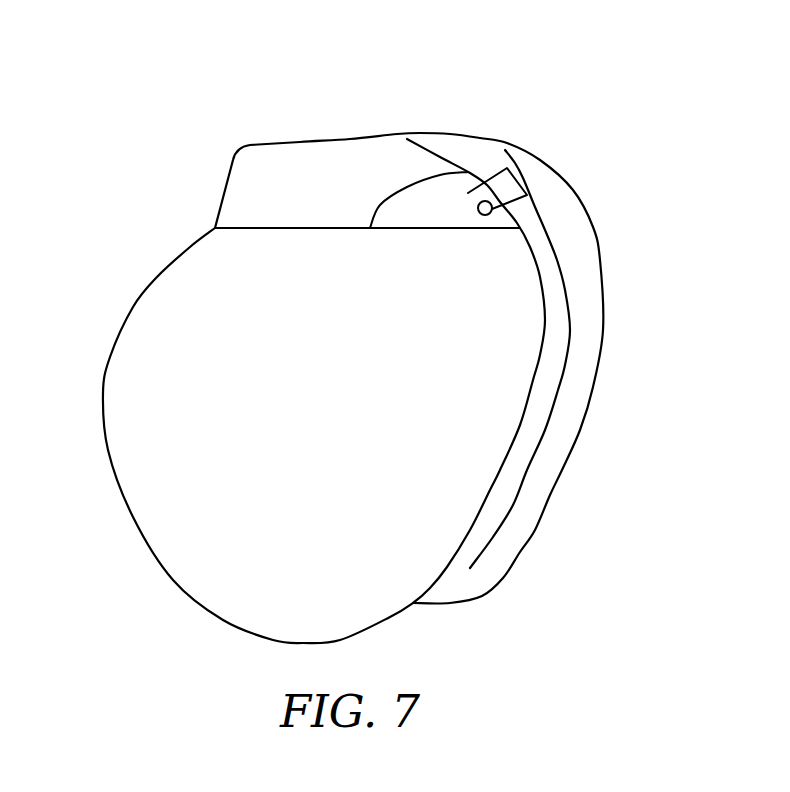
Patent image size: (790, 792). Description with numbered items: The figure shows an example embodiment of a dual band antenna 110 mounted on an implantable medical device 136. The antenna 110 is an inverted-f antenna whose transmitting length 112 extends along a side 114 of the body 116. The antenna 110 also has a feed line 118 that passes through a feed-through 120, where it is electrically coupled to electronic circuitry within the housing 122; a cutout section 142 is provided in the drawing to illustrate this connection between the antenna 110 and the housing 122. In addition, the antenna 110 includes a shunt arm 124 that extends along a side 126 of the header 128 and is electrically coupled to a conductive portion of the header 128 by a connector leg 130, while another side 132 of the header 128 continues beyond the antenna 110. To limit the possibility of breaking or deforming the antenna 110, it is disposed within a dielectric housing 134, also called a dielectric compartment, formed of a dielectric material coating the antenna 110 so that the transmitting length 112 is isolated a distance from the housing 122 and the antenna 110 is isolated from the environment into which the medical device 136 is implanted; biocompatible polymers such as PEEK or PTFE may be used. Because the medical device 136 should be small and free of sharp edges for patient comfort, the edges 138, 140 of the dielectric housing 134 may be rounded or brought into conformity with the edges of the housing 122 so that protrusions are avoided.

The dual band antenna 110 is at (636, 135).
The transmitting length 112 is at (527, 477).
The side of body 114 is at (490, 490).
The body 116 is at (339, 417).
The feed line 118 is at (528, 197).
The feed-through 120 is at (488, 216).
The housing 122 is at (121, 250).
The shunt arm 124 is at (523, 172).
The side of header 126 is at (478, 204).
The header 128 is at (300, 212).
The connector leg 130 is at (496, 167).
The side of header 132 is at (393, 134).
The dielectric housing 134 is at (512, 550).
The medical device 136 is at (632, 64).
The edge of dielectric housing 138 is at (451, 134).
The edge of dielectric housing 140 is at (470, 604).
The cutout section 142 is at (441, 221).